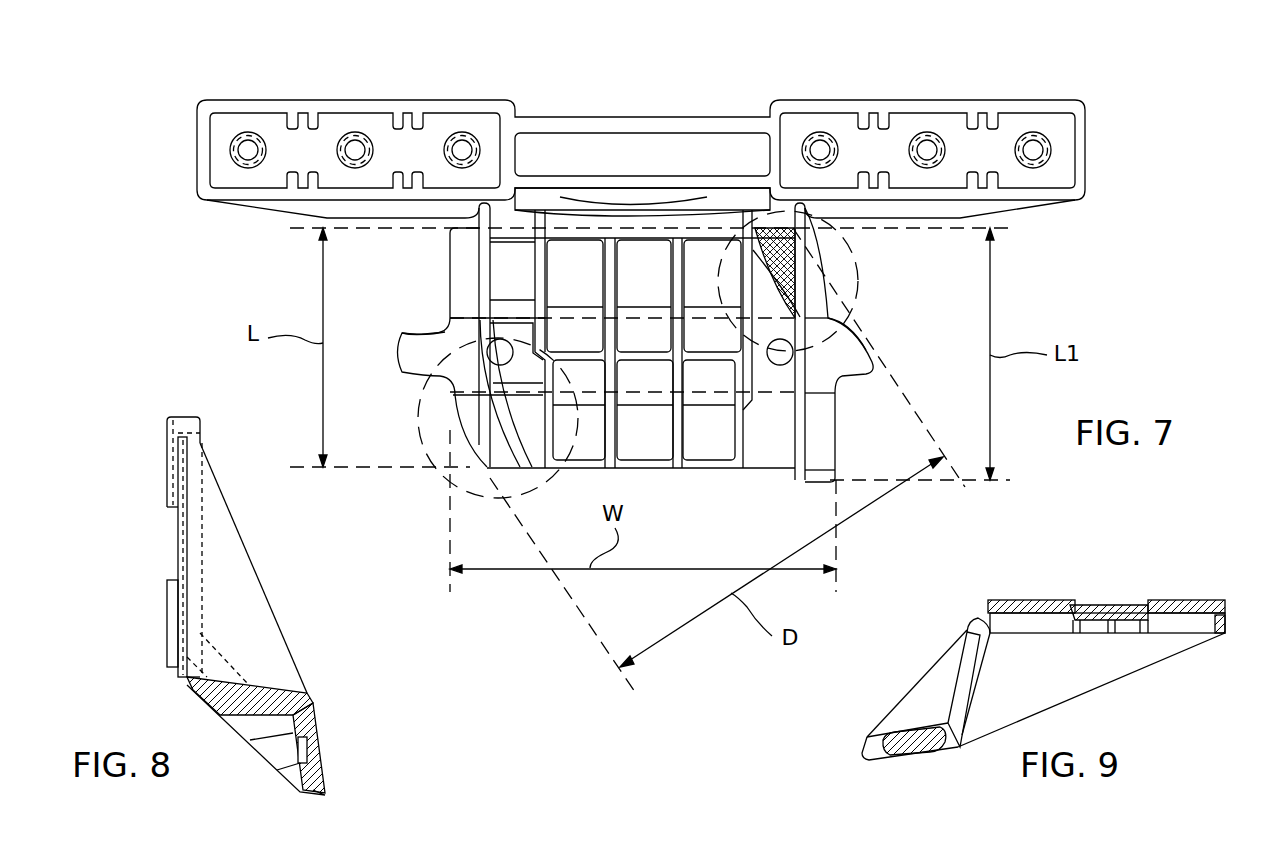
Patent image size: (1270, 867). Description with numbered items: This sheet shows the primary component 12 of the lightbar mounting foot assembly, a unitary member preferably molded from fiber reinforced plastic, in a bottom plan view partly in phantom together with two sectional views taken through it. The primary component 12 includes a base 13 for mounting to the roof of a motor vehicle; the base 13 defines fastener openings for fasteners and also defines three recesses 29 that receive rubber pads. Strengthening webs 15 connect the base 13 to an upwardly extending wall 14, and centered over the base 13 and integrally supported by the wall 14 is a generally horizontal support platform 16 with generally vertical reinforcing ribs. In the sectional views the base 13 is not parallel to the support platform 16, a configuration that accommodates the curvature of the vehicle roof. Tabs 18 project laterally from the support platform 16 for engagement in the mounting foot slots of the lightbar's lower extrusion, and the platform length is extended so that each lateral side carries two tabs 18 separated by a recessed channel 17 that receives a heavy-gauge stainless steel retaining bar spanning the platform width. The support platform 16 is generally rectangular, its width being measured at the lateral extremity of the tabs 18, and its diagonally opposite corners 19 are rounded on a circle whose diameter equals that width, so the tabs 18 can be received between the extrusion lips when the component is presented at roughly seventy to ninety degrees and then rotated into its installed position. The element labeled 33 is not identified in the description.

In FIG. 7, the primary component 12 is at (870, 288).
In FIG. 7, the base 13 is at (443, 110).
In FIG. 8, the base 13 is at (327, 792).
In FIG. 9, the base 13 is at (865, 757).
In FIG. 8, the upwardly extending wall 14 is at (187, 687).
In FIG. 9, the upwardly extending wall 14 is at (960, 680).
In FIG. 8, the strengthening webs 15 is at (247, 643).
In FIG. 9, the strengthening webs 15 is at (923, 710).
In FIG. 8, the support platform 16 is at (167, 463).
In FIG. 9, the support platform 16 is at (1028, 598).
In FIG. 8, the recessed channel 17 is at (175, 535).
In FIG. 9, the recessed channel 17 is at (1098, 603).
In FIG. 7, the tabs 18 is at (445, 335).
In FIG. 7, the diagonally opposite corners 19 is at (467, 495).
In FIG. 7, the recesses 29 is at (330, 125).
In FIG. 8, the recesses 29 is at (310, 723).
In FIG. 7, the lower tab 33 is at (820, 478).